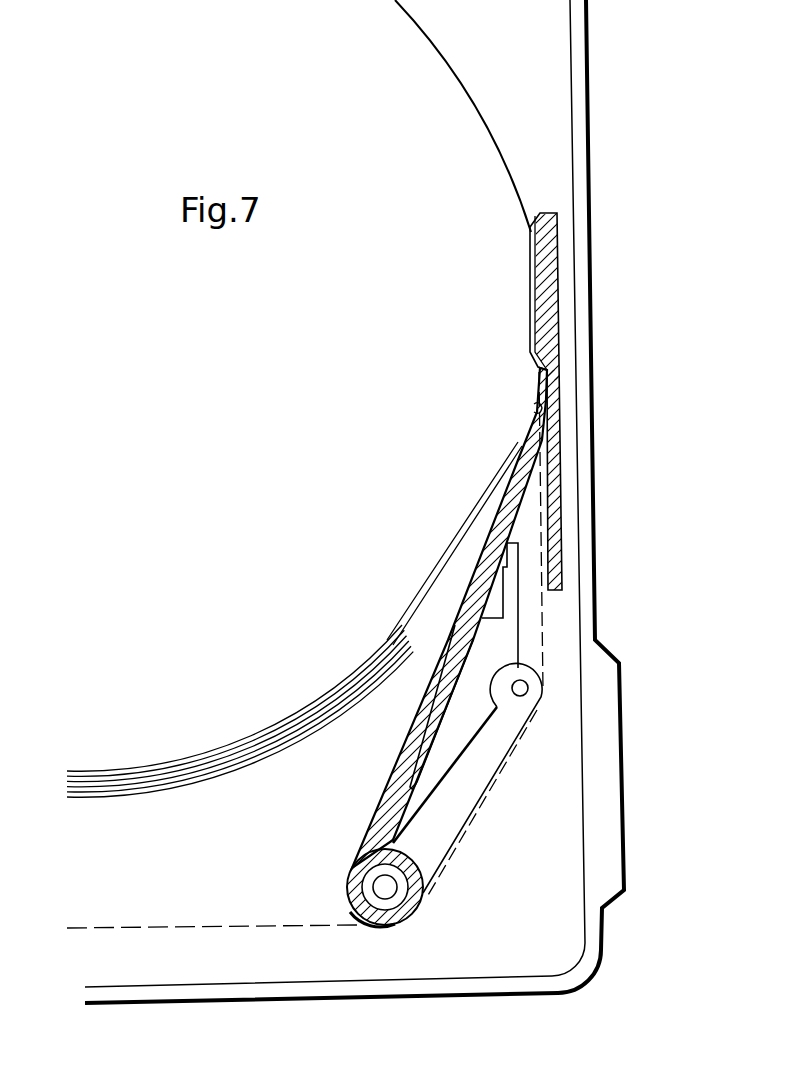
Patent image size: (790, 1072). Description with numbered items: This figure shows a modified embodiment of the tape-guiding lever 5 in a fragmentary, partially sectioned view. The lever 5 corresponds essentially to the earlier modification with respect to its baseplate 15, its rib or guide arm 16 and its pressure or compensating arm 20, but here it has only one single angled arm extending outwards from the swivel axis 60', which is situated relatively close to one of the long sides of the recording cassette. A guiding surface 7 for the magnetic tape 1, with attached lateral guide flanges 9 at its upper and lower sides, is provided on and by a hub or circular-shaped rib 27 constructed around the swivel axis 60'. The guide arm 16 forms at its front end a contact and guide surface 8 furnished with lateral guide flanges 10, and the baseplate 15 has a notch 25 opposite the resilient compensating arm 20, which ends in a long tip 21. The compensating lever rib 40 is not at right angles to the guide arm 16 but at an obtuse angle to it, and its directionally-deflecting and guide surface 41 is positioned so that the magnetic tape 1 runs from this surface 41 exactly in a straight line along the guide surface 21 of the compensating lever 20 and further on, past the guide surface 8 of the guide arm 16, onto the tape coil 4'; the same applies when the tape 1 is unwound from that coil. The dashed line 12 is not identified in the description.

The magnetic tape 1 is at (229, 928).
The tape coil 4' is at (299, 398).
The lever 5 is at (566, 360).
The guiding surface 7 is at (413, 920).
The contact and guide surface 8 is at (538, 288).
The lateral guide flanges 9 is at (388, 923).
The lateral guide flanges 10 is at (530, 240).
The center line 12 is at (551, 623).
The base plate 15 is at (477, 672).
The guide arm 16 is at (551, 427).
The compensating lever 20 is at (480, 590).
The tip 21 is at (534, 407).
The notch 25 is at (492, 598).
The circular-shaped rib 27 is at (363, 918).
The compensating lever rib 40 is at (453, 743).
The directionally-deflecting and guide surface 41 is at (540, 688).
The swivel axis 60' is at (428, 904).